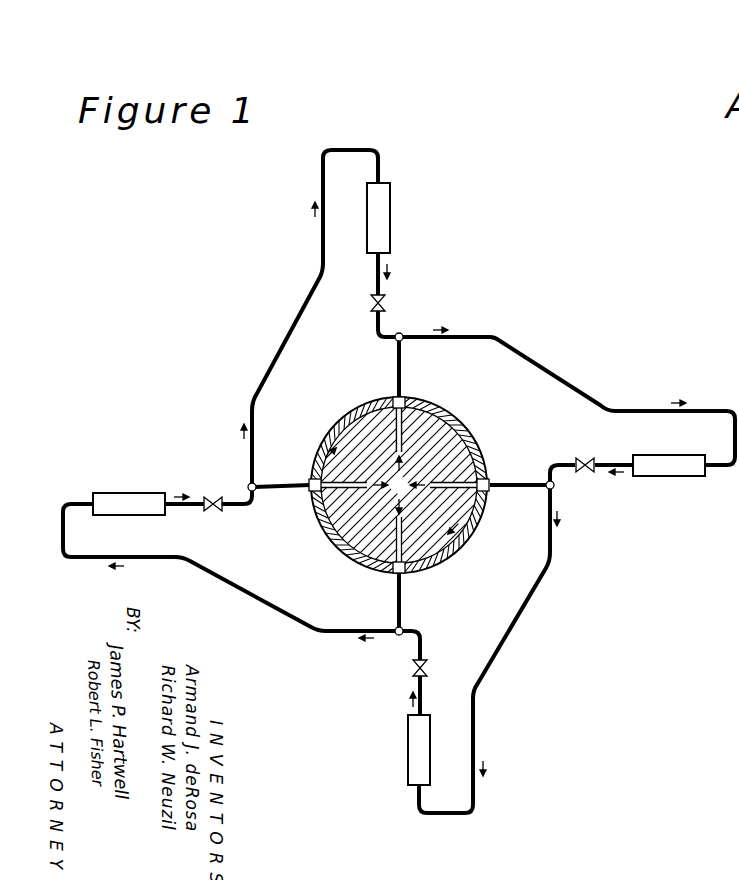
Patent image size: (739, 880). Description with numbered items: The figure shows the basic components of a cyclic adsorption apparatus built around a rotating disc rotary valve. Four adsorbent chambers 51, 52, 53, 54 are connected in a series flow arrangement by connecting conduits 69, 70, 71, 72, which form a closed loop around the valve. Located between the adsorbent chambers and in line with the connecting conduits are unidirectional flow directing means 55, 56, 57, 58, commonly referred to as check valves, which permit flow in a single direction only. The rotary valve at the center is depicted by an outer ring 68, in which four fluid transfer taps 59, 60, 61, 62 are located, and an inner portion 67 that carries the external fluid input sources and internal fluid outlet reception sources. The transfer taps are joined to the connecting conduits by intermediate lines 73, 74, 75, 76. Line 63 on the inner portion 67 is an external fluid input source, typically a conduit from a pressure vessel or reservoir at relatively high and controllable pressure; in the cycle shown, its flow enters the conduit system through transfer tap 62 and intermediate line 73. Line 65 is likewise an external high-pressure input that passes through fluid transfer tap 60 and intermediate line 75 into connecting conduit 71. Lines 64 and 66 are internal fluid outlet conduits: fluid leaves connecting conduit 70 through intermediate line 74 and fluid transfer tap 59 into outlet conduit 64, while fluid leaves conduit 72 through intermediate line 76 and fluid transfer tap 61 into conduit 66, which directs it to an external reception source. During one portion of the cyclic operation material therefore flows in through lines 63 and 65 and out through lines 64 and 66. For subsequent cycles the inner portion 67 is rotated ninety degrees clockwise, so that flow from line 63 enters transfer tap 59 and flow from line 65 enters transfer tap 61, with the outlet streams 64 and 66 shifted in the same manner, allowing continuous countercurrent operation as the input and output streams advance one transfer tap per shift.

The adsorbent chamber 51 is at (408, 747).
The adsorbent chamber 52 is at (107, 492).
The adsorbent chamber 53 is at (390, 216).
The adsorbent chamber 54 is at (660, 477).
The unidirectional flow directing means 55 is at (424, 666).
The unidirectional flow directing means 56 is at (210, 511).
The unidirectional flow directing means 57 is at (385, 300).
The unidirectional flow directing means 58 is at (587, 461).
The fluid transfer tap 59 is at (300, 497).
The fluid transfer tap 60 is at (396, 397).
The fluid transfer tap 61 is at (490, 481).
The fluid transfer tap 62 is at (404, 575).
The external fluid input source line 63 is at (404, 520).
The internal fluid outlet conduit 64 is at (337, 497).
The external fluid input source line 65 is at (405, 433).
The internal fluid outlet conduit 66 is at (470, 500).
The inner portion 67 is at (395, 478).
The outer ring 68 is at (458, 419).
The connecting conduit 69 is at (260, 603).
The connecting conduit 70 is at (292, 327).
The connecting conduit 71 is at (377, 274).
The connecting conduit 72 is at (607, 463).
The intermediate line 73 is at (398, 605).
The intermediate line 74 is at (309, 484).
The intermediate line 75 is at (400, 374).
The intermediate line 76 is at (524, 489).